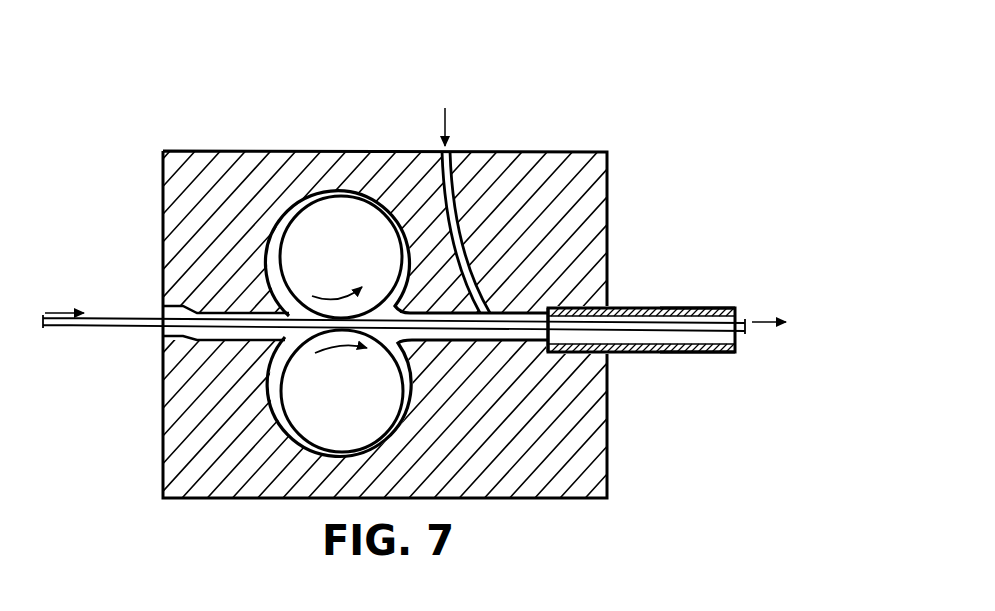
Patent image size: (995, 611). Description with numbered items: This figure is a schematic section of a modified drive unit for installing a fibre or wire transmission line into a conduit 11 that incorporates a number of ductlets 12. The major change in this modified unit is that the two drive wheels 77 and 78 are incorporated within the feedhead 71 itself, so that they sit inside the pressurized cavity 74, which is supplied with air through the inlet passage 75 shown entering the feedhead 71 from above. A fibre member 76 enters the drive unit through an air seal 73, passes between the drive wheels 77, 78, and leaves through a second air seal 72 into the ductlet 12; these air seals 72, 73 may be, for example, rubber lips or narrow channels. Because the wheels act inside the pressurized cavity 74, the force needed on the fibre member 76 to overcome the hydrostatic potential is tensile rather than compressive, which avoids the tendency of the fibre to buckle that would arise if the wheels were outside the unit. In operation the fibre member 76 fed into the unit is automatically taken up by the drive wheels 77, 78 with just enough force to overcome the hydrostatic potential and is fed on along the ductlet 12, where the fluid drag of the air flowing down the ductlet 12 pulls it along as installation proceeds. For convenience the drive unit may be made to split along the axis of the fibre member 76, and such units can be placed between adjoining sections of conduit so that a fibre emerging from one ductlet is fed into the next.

The conduit 11 is at (694, 308).
The ductlet 12 is at (643, 335).
The feedhead 71 is at (555, 452).
The air seal 72 is at (632, 308).
The air seal 73 is at (192, 312).
The pressurized cavity 74 is at (607, 308).
The feed channel 75 is at (487, 153).
The fibre member 76 is at (693, 333).
The drive wheel 77 is at (406, 254).
The drive wheel 78 is at (407, 393).